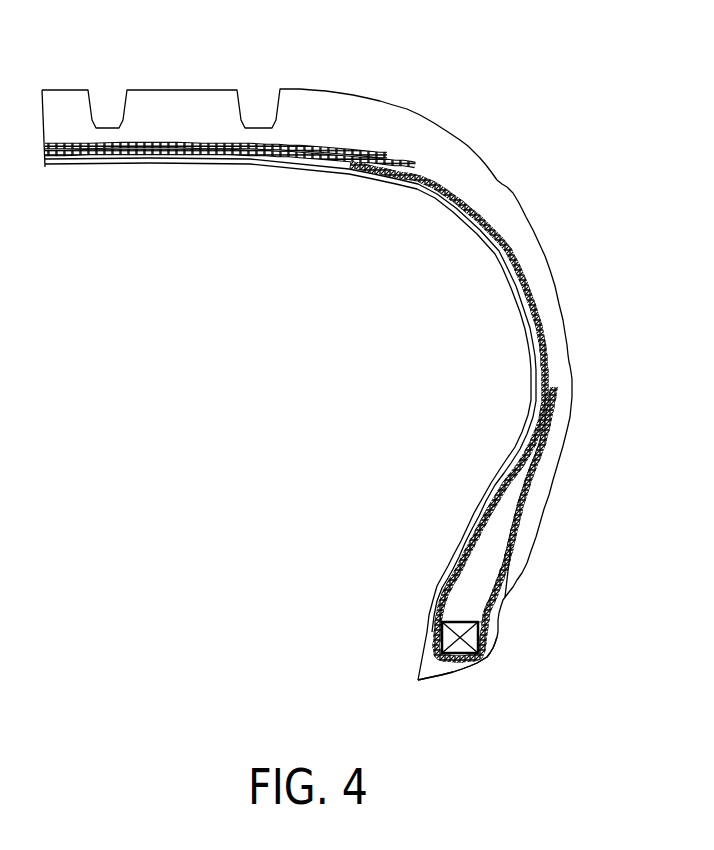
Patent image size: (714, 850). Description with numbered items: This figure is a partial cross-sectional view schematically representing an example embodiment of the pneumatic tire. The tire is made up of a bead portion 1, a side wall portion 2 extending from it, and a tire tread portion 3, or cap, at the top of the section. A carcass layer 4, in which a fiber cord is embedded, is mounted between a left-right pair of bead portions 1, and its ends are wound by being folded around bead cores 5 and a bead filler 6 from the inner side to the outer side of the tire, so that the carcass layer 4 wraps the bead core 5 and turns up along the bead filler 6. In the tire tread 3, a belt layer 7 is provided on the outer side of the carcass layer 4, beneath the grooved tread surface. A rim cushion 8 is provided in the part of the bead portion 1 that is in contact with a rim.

The bead portion 1 is at (518, 658).
The side wall portion 2 is at (590, 366).
The tire tread portion 3 is at (162, 73).
The carcass layer 4 is at (535, 280).
The bead core 5 is at (448, 641).
The bead filler 6 is at (475, 582).
The belt layer 7 is at (400, 158).
The rim cushion 8 is at (456, 667).